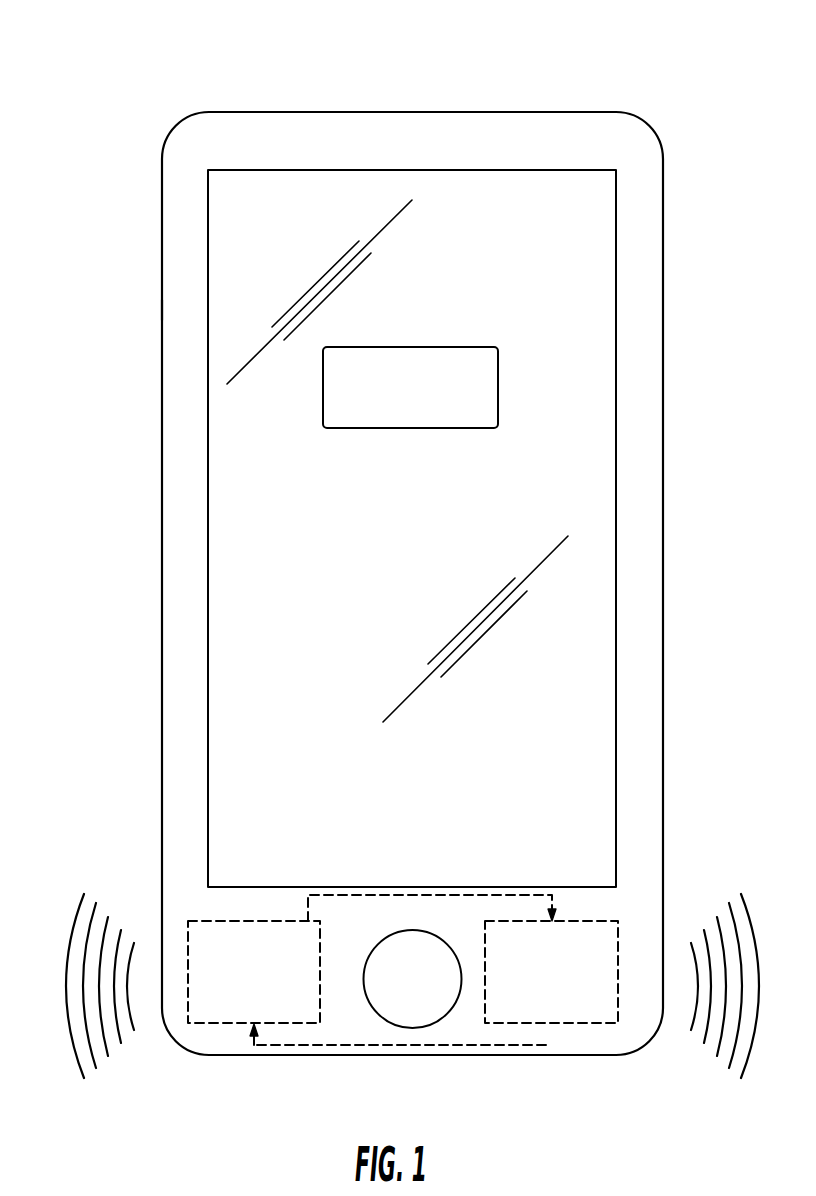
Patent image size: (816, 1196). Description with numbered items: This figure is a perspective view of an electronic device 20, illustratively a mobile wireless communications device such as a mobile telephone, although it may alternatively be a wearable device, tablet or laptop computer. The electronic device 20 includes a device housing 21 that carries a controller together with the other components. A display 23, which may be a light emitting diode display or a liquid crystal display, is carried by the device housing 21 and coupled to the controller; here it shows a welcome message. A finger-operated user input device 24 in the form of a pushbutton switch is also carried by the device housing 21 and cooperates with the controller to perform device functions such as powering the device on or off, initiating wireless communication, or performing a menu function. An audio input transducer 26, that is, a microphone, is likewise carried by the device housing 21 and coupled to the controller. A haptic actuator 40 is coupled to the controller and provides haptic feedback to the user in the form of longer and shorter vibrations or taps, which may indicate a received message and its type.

The electronic device 20 is at (171, 83).
The device housing 21 is at (161, 292).
The display 23 is at (208, 468).
The finger-operated user input device 24 is at (413, 1030).
The audio input transducer 26 is at (528, 1055).
The haptic actuator 40 is at (597, 1023).